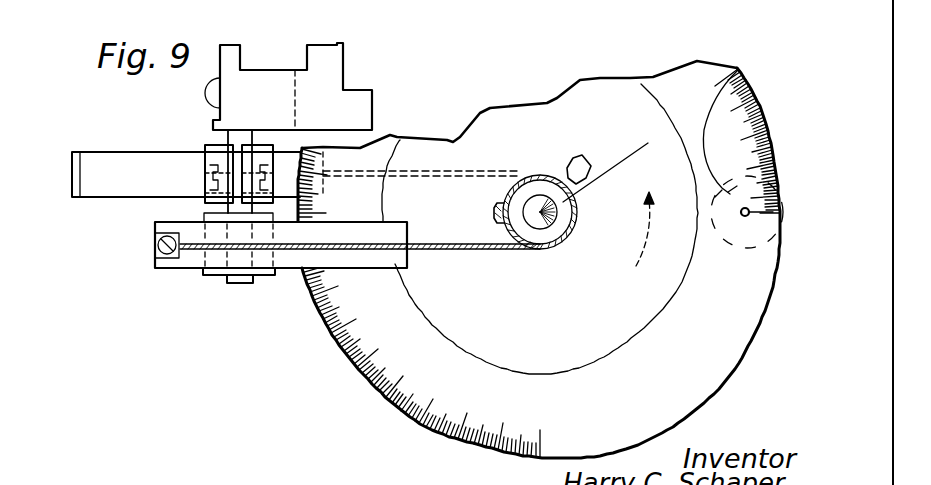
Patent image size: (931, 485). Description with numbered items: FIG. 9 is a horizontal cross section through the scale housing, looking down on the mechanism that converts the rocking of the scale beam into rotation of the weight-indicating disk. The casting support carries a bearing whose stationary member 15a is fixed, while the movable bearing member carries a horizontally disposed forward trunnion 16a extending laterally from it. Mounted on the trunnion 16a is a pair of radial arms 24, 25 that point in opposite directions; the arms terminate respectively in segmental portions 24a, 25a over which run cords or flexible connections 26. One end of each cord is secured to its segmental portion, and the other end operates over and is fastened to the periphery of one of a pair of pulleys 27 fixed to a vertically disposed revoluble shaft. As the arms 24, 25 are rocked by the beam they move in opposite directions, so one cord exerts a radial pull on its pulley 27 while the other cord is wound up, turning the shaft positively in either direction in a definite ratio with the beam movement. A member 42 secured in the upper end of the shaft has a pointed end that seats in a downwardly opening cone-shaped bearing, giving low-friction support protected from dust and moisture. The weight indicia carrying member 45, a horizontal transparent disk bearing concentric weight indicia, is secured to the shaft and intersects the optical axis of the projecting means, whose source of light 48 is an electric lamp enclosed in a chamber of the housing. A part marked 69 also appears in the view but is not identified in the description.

The stationary member 15a is at (220, 95).
The radial arm 25 is at (207, 165).
The segmental portion 25a is at (123, 187).
The radial arm 24 is at (207, 277).
The segmental portion 24a is at (297, 270).
The forward trunnion 16a is at (242, 287).
The cord or flexible connection 26 is at (455, 252).
The weight indicia carrying member 45 is at (383, 373).
The pointed bearing member 42 is at (560, 228).
The pawl 69 is at (577, 160).
The pulley 27 is at (623, 170).
The source of light 48 is at (720, 68).